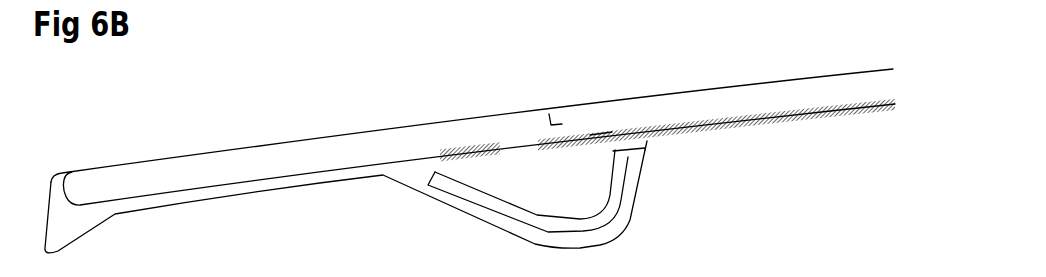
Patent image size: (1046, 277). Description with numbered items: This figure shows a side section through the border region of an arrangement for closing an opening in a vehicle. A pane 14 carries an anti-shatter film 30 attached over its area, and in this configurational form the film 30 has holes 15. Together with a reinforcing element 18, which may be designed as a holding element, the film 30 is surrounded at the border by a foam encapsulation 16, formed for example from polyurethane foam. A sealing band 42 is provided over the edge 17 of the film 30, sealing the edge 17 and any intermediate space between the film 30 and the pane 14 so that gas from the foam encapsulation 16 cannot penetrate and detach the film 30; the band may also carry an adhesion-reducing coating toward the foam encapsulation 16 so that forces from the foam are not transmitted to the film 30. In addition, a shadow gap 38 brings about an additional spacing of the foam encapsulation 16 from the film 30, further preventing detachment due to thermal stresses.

The pane 14 is at (789, 95).
The holes 15 is at (556, 112).
The foam encapsulation 16 is at (415, 172).
The edge 17 is at (600, 139).
The reinforcing element 18 is at (465, 195).
The anti-shatter film 30 is at (467, 153).
The shadow gap 38 is at (649, 141).
The sealing band 42 is at (575, 143).